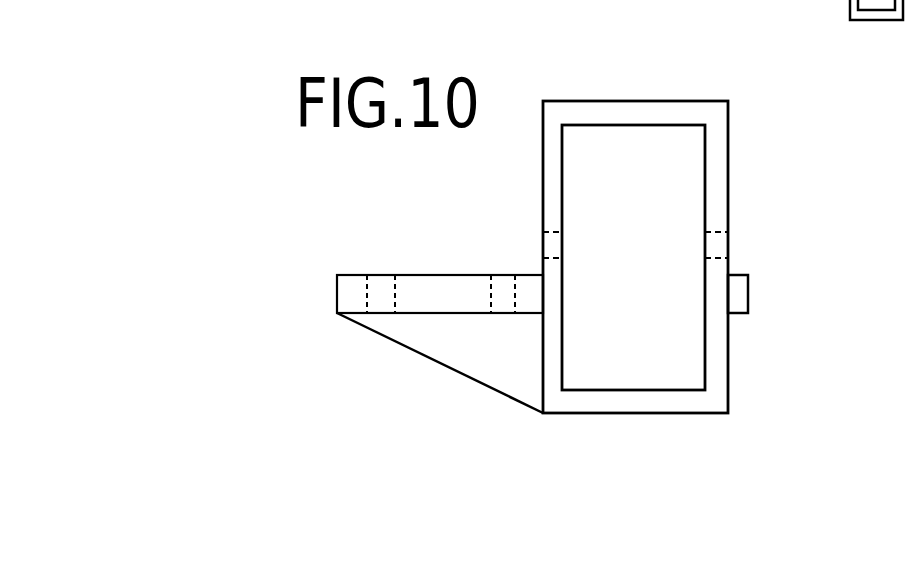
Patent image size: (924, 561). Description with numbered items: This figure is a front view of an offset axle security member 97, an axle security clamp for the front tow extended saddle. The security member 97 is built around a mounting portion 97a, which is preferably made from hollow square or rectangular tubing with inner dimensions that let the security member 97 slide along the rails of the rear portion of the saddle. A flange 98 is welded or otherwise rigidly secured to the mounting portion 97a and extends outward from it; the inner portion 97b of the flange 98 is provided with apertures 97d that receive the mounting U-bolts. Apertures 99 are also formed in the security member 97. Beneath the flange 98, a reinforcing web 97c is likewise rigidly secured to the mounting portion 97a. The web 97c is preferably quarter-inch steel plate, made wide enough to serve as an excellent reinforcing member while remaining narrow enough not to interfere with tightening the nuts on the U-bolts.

The offset axle security member 97 is at (764, 160).
The mounting portion 97a is at (685, 101).
The inner portion 97b is at (433, 275).
The reinforcing web 97c is at (415, 350).
The apertures 97d is at (367, 278).
The flange 98 is at (740, 275).
The apertures 99 is at (723, 240).